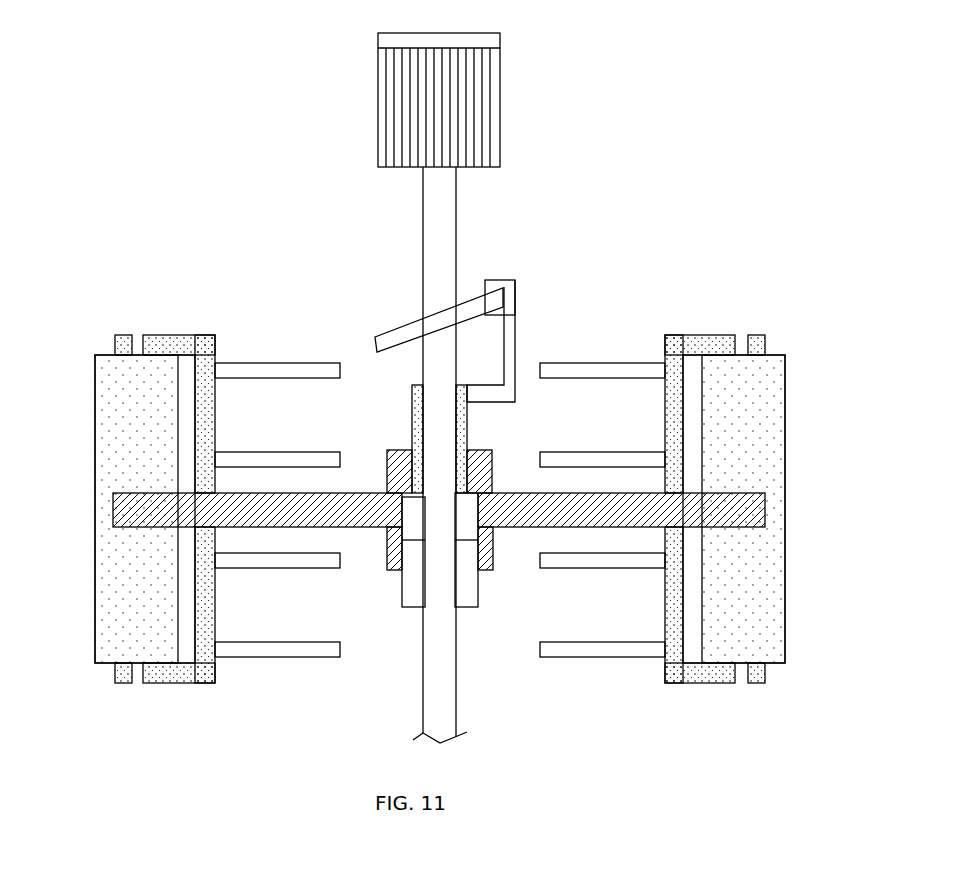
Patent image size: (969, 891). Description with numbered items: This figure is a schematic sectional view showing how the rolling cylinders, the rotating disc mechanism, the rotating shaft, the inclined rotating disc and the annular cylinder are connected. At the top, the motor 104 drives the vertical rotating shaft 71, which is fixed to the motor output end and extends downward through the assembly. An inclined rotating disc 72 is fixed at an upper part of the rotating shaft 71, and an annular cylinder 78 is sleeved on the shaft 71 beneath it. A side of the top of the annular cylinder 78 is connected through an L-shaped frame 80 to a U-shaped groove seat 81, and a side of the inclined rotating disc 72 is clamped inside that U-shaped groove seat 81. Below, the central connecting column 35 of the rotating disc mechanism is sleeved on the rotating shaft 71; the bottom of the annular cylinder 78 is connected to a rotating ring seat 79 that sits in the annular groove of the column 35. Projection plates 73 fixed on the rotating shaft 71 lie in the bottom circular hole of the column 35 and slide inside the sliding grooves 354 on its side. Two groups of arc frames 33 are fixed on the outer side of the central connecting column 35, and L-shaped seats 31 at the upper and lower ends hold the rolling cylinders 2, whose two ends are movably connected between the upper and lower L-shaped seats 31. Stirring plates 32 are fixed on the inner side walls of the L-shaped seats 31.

The rolling cylinder 2 is at (123, 427).
The L-shaped seat 31 is at (208, 680).
The stirring plate 32 is at (587, 560).
The arc frame 33 is at (115, 503).
The central connecting column 35 is at (397, 558).
The sliding groove 354 is at (468, 517).
The rotating shaft 71 is at (437, 230).
The inclined rotating disc 72 is at (407, 330).
The projection plate 73 is at (410, 590).
The annular cylinder 78 is at (463, 428).
The rotating ring seat 79 is at (400, 470).
The L-shaped frame 80 is at (507, 343).
The U-shaped groove seat 81 is at (513, 290).
The motor 104 is at (478, 93).